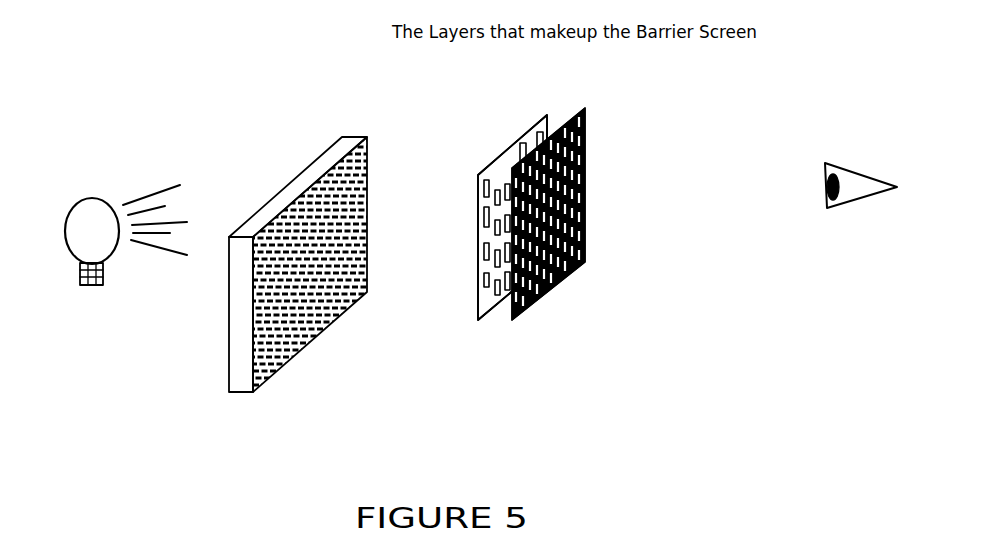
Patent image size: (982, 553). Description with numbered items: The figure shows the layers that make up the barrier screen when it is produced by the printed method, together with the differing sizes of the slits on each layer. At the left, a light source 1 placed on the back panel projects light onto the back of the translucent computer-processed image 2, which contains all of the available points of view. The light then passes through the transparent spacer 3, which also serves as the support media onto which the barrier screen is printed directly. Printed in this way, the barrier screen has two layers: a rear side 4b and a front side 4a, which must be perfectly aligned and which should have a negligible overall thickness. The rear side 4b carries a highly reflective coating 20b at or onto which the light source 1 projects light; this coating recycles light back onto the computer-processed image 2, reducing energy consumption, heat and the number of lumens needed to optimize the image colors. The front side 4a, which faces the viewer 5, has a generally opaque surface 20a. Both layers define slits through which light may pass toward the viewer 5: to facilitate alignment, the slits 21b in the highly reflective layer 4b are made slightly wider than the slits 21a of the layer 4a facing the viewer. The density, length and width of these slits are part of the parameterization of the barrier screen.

The light source 1 is at (90, 305).
The computer-processed image 2 is at (270, 380).
The spacer 3 is at (272, 205).
The front side of barrier screen 4a is at (587, 112).
The rear side of barrier screen 4b is at (533, 124).
The opaque surface of front layer 20a is at (582, 245).
The reflective surface of rear layer 20b is at (490, 296).
The slits of front layer 21a is at (582, 230).
The slits of reflective layer 21b is at (493, 262).
The viewer 5 is at (858, 220).